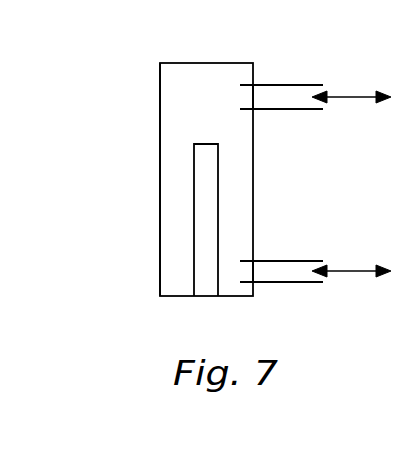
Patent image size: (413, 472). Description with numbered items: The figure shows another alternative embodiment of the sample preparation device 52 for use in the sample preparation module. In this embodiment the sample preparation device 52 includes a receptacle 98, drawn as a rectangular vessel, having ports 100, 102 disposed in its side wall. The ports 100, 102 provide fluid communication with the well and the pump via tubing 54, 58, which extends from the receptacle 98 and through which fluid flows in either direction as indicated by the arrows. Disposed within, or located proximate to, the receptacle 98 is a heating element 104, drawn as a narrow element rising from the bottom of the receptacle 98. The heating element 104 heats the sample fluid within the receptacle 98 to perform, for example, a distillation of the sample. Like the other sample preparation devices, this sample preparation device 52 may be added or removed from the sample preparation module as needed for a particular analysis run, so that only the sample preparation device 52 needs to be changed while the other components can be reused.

The sample preparation device 52 is at (118, 63).
The receptacle 98 is at (160, 233).
The heating element 104 is at (205, 268).
The tubing 54 is at (289, 82).
The port 100 is at (254, 95).
The tubing 58 is at (287, 259).
The port 102 is at (256, 271).